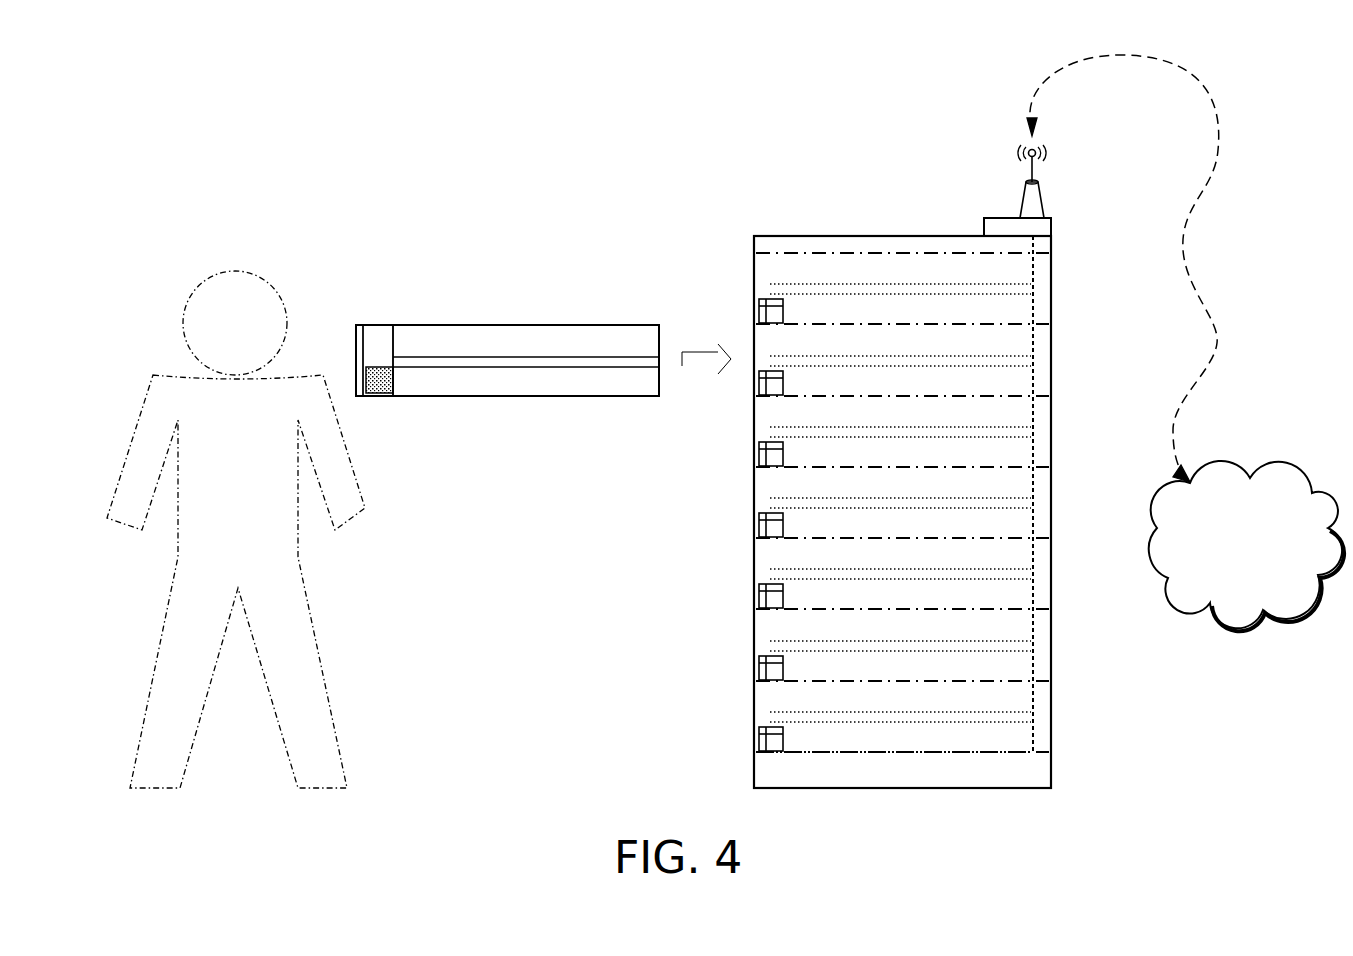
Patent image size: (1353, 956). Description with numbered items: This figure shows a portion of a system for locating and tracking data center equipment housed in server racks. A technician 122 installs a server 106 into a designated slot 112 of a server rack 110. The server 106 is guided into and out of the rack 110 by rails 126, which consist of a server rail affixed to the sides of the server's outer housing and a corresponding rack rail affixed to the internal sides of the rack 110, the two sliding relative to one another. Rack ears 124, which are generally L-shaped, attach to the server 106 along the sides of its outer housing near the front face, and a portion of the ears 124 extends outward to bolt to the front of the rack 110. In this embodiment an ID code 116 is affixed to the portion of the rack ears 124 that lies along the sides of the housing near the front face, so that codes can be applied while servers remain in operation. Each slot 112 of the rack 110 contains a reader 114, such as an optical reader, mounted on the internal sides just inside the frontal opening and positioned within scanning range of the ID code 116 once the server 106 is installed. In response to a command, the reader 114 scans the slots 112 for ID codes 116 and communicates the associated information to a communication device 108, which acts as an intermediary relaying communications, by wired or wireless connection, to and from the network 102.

The network 102 is at (1246, 546).
The server 106 is at (442, 228).
The communication device 108 is at (1036, 226).
The server rack 110 is at (700, 603).
The slot 112 is at (735, 680).
The reader 114 is at (772, 458).
The ID code 116 is at (380, 412).
The technician 122 is at (360, 631).
The rack ears 124 is at (378, 356).
The rails 126 is at (783, 360).